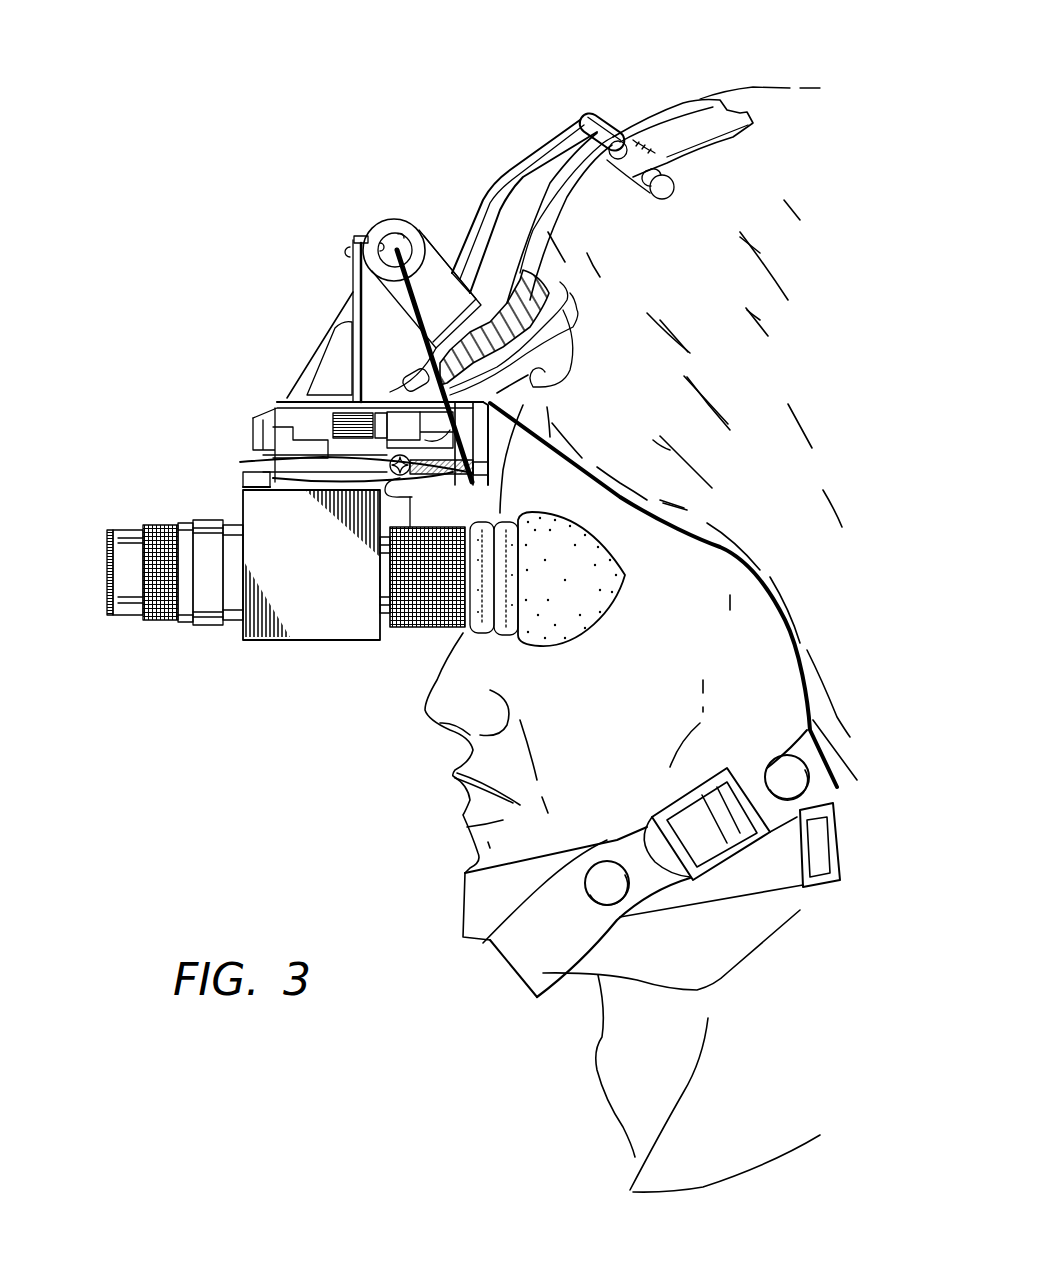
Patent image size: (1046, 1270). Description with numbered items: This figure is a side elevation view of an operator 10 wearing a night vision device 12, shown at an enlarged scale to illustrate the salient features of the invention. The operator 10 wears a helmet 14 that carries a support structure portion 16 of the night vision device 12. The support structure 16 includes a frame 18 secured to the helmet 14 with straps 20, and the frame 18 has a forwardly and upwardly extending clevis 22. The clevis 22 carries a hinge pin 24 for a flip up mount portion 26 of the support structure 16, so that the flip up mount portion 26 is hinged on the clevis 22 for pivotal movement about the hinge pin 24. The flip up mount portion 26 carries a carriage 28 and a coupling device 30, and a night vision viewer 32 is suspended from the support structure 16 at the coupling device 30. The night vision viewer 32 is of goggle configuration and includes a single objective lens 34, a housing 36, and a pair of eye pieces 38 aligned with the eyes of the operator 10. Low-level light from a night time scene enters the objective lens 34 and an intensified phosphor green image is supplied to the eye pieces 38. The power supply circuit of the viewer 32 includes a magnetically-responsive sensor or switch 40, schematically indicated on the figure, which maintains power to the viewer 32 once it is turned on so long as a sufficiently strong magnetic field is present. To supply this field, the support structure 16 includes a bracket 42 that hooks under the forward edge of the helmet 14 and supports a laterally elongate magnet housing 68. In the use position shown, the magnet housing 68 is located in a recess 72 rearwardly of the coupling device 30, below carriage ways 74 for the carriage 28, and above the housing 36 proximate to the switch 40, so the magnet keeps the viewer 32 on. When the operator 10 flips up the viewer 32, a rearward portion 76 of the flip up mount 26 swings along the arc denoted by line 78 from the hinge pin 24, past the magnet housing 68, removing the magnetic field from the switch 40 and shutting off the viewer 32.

The operator 10 is at (383, 702).
The night vision device 12 is at (498, 140).
The helmet 14 is at (787, 100).
The support structure portion 16 is at (577, 103).
The frame 18 is at (537, 153).
The straps 20 is at (713, 105).
The clevis 22 is at (423, 240).
The hinge pin 24 is at (393, 237).
The flip up mount portion 26 is at (326, 292).
The carriage 28 is at (340, 452).
The coupling device 30 is at (243, 478).
The night vision viewer 32 is at (262, 652).
The objective lens 34 is at (107, 570).
The housing 36 is at (327, 632).
The eye pieces 38 is at (410, 637).
The magnetically-responsive sensor or switch 40 is at (410, 510).
The bracket 42 is at (540, 377).
The magnet housing 68 is at (323, 458).
The recess 72 is at (440, 476).
The carriage ways 74 is at (437, 428).
The rearward portion 76 is at (490, 452).
The arc line 78 is at (412, 300).